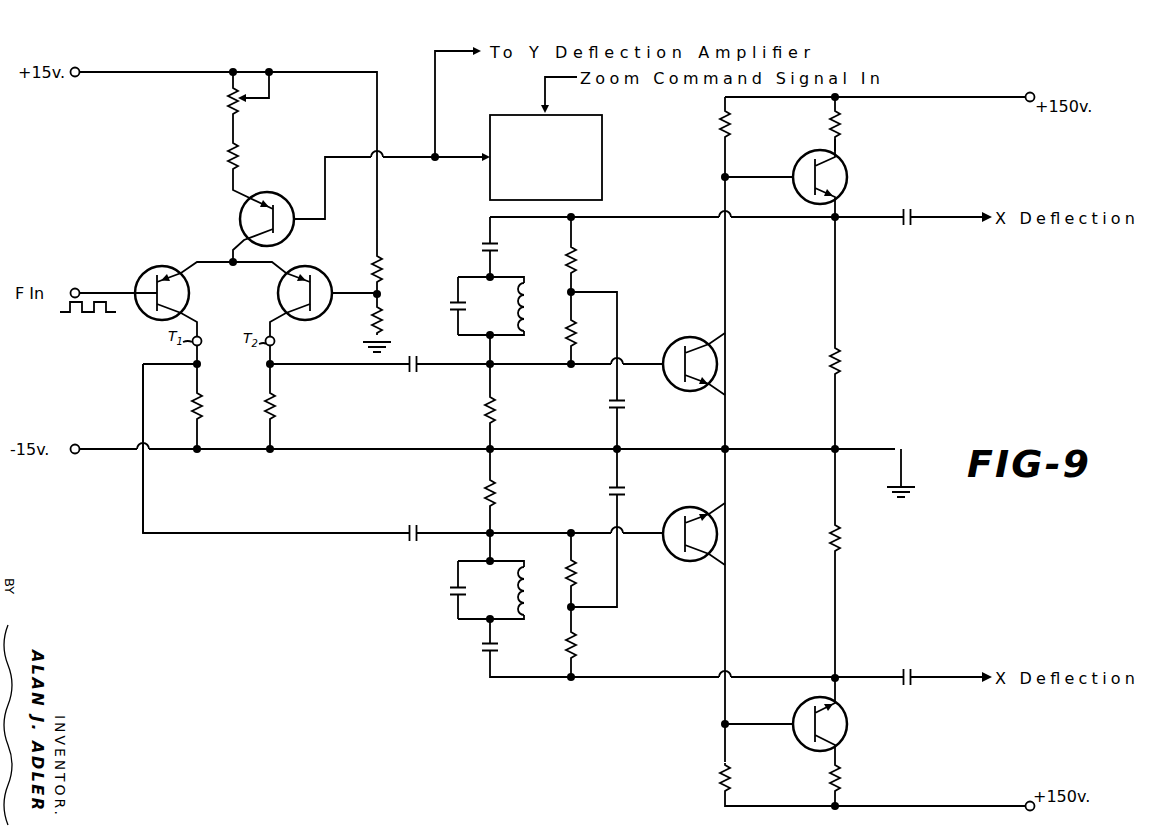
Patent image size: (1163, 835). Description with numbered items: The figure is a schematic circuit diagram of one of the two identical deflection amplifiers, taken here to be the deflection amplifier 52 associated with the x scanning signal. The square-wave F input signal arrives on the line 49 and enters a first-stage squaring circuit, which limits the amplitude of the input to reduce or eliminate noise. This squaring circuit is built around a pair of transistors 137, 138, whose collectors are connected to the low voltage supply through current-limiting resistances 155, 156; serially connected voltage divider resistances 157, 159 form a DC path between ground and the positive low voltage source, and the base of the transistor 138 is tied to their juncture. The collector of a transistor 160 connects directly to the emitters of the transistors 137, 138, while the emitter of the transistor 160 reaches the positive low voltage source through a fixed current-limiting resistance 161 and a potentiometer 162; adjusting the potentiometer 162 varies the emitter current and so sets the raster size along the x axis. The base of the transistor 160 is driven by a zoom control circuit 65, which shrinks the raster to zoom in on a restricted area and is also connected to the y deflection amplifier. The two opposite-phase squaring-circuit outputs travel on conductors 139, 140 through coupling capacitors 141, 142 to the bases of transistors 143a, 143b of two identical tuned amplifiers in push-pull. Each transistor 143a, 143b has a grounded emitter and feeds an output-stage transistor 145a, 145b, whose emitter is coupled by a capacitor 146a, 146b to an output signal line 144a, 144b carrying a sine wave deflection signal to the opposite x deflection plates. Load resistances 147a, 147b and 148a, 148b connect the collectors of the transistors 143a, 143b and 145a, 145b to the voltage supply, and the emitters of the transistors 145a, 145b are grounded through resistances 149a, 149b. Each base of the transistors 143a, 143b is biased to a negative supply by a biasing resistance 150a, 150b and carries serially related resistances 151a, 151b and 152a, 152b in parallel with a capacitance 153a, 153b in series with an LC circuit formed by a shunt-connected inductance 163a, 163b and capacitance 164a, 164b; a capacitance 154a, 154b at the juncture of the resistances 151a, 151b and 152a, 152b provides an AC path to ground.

The line 49 is at (112, 290).
The deflection amplifier 52 is at (248, 554).
The zoom control circuit 65 is at (602, 148).
The transistor 137 is at (164, 268).
The transistor 138 is at (323, 269).
The conductor 139 is at (320, 367).
The conductor 140 is at (322, 508).
The coupling capacitor 141 is at (405, 369).
The coupling capacitor 142 is at (413, 506).
The transistor 143a is at (692, 336).
The transistor 143b is at (694, 508).
The output signal line 144a is at (1007, 250).
The output signal line 144b is at (1005, 635).
The transistor 145a is at (848, 168).
The transistor 145b is at (848, 724).
The capacitor 146a is at (908, 209).
The capacitor 146b is at (910, 658).
The load resistance 147a is at (728, 129).
The load resistance 147b is at (719, 774).
The load resistance 148a is at (843, 121).
The load resistance 148b is at (815, 790).
The resistance 149a is at (845, 357).
The resistance 149b is at (828, 535).
The biasing resistance 150a is at (483, 416).
The biasing resistance 150b is at (483, 487).
The resistance 151a is at (578, 262).
The resistance 151b is at (582, 645).
The resistance 152a is at (555, 326).
The resistance 152b is at (553, 568).
The capacitance 153a is at (480, 245).
The capacitance 153b is at (480, 650).
The capacitance 154a is at (604, 418).
The capacitance 154b is at (604, 498).
The current-limiting resistance 155 is at (204, 410).
The current-limiting resistance 156 is at (280, 402).
The voltage divider resistance 157 is at (384, 270).
The voltage divider resistance 159 is at (370, 318).
The transistor 160 is at (290, 195).
The fixed current-limiting resistance 161 is at (230, 158).
The potentiometer 162 is at (229, 99).
The inductance 163a is at (534, 286).
The inductance 163b is at (540, 605).
The capacitance 164a is at (453, 302).
The capacitance 164b is at (446, 588).